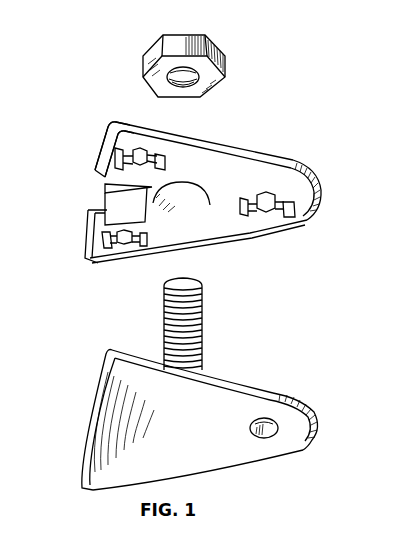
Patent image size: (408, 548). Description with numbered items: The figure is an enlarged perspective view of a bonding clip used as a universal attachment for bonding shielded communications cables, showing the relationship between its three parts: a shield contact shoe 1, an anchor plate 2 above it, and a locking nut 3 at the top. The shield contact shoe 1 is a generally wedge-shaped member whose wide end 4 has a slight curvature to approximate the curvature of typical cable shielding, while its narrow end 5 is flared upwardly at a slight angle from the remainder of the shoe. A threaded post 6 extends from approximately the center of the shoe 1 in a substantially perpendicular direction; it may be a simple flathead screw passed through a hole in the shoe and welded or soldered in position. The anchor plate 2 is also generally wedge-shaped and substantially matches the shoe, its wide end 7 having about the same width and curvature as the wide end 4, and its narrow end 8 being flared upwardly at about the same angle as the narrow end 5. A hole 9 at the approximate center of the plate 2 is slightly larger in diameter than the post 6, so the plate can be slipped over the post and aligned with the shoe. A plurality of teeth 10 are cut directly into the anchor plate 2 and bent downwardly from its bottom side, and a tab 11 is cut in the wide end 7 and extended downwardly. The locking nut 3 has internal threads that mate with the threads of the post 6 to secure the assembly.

The shield contact shoe 1 is at (216, 380).
The anchor plate 2 is at (192, 147).
The locking nut 3 is at (155, 55).
The wide end 4 is at (95, 407).
The narrow end 5 is at (275, 395).
The threaded post 6 is at (203, 303).
The wide end 7 is at (105, 152).
The narrow end 8 is at (312, 175).
The hole 9 is at (185, 192).
The teeth 10 is at (160, 165).
The tab 11 is at (93, 200).